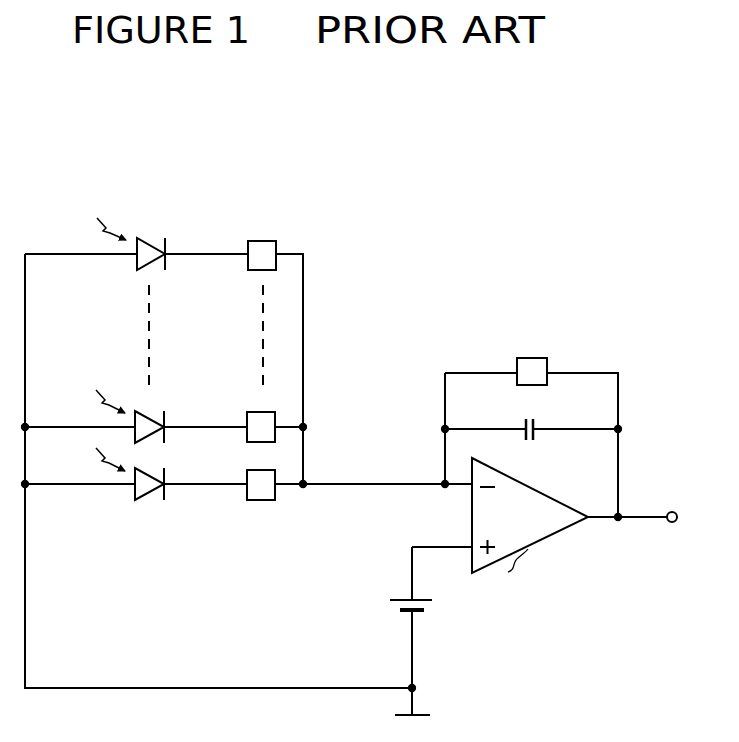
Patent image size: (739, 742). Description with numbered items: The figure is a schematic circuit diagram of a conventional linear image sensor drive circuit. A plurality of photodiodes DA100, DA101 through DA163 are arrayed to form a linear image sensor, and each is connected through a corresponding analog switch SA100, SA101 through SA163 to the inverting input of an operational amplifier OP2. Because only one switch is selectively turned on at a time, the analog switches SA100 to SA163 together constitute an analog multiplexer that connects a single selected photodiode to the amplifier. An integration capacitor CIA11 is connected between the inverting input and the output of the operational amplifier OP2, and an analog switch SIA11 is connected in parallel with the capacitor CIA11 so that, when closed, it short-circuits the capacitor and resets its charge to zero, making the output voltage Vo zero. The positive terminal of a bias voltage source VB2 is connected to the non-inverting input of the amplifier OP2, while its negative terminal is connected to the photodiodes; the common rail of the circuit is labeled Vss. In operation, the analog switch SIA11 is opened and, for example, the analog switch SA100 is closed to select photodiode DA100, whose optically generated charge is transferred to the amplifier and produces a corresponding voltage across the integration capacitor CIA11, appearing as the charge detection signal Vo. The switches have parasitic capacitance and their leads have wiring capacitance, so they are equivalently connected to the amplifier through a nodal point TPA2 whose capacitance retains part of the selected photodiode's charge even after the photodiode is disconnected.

The photodiode DA163 is at (167, 243).
The photodiode DA101 is at (166, 413).
The photodiode DA100 is at (166, 471).
The analog switch SA163 is at (278, 244).
The analog switch SA101 is at (278, 413).
The analog switch SA100 is at (278, 471).
The analog switch SIA11 is at (530, 357).
The integration capacitor CIA11 is at (540, 402).
The operational amplifier OP2 is at (522, 478).
The nodal point TPA2 is at (358, 487).
The bias voltage source VB2 is at (402, 596).
The output voltage Vo is at (697, 519).
The supply voltage terminal Vss is at (453, 714).